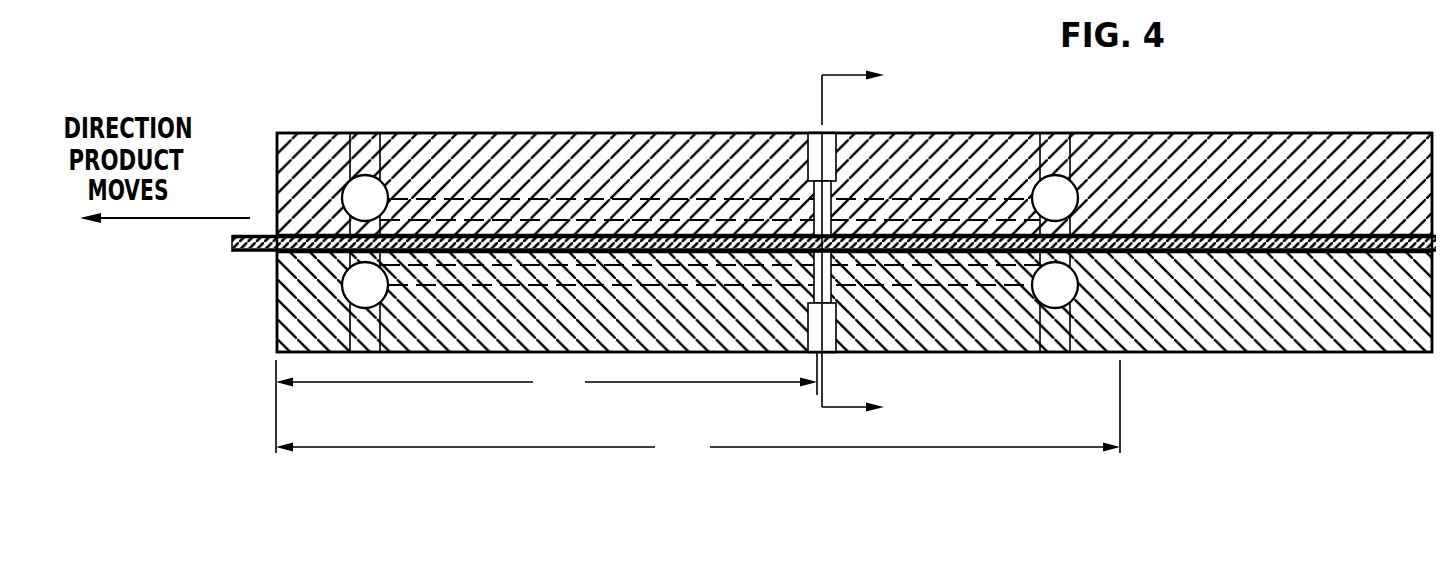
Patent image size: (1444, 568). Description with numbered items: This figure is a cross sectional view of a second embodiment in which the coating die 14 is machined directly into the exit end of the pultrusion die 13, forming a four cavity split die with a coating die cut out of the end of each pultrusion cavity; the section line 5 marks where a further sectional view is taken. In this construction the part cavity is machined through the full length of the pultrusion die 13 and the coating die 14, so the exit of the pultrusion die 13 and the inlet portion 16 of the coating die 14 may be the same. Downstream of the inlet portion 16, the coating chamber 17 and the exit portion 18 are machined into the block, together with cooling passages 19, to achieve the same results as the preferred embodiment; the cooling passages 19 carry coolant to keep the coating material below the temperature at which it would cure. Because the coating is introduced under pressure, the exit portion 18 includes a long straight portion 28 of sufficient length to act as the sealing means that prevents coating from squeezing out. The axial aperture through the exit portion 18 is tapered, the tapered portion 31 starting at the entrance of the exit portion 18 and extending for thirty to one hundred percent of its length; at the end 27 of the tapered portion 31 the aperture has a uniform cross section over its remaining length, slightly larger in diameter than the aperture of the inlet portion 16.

The section line 5- 5 is at (864, 242).
The pultrusion die 13 is at (1272, 352).
The coating die 14 is at (698, 412).
The inlet portion 16 is at (945, 255).
The coating chamber 17 is at (818, 230).
The exit portion 18 is at (546, 402).
The cooling passages 19 is at (442, 210).
The end of the tapered portion 27 is at (633, 237).
The long straight portion 28 is at (497, 230).
The tapered portion 31 is at (727, 228).